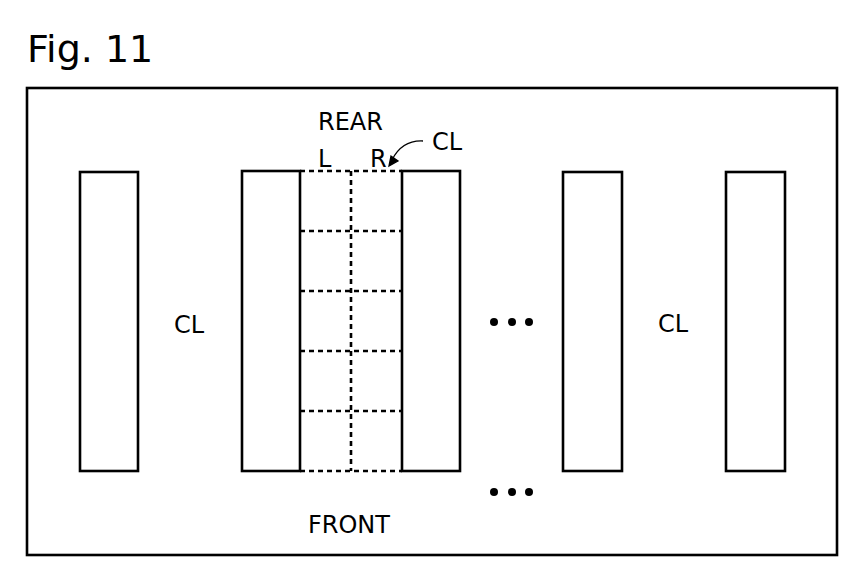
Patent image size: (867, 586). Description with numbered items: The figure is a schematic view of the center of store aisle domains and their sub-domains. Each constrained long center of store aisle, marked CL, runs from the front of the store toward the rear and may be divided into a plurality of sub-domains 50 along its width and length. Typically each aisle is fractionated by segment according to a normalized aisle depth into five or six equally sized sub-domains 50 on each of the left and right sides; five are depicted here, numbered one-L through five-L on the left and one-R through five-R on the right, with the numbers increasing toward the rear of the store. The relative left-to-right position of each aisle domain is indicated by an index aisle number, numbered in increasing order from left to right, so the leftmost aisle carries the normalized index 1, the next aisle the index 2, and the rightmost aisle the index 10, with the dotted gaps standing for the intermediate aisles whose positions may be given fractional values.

The sub-domains 50 is at (306, 166).
The index aisle number of leftmost aisle 1 is at (140, 340).
The index aisle number of second aisle 2 is at (351, 339).
The index aisle number of rightmost aisle 10 is at (720, 340).